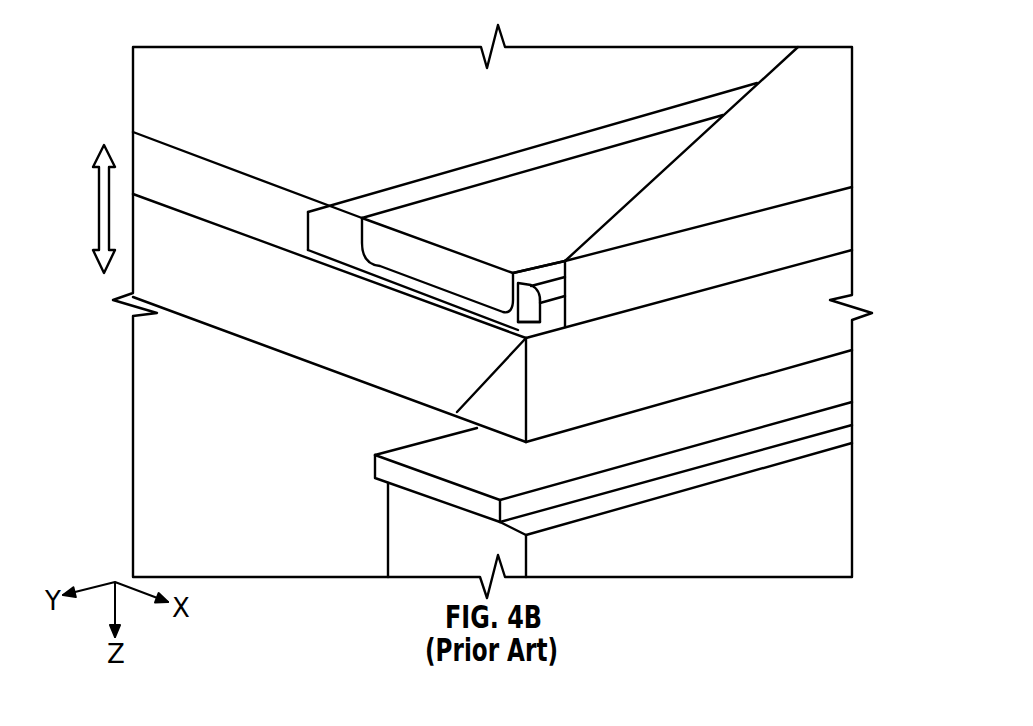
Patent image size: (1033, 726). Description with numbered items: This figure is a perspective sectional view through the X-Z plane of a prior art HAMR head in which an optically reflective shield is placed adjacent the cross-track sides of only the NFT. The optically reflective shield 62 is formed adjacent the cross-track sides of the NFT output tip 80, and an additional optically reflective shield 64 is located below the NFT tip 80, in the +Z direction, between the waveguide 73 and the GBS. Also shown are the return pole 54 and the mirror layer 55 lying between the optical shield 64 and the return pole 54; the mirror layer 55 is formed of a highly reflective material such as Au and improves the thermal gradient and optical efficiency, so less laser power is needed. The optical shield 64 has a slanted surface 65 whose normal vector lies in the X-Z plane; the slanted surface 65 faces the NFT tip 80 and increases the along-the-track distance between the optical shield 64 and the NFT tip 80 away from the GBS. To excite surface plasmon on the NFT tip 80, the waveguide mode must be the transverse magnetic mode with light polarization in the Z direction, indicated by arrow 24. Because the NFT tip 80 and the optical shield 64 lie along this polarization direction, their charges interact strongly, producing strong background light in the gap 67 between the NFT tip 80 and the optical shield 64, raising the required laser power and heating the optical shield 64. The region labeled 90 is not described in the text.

The arrow indicating light polarization direction 24 is at (98, 208).
The recess 90 is at (563, 213).
The optically reflective shield 62 is at (828, 220).
The additional optically reflective shield 64 is at (828, 275).
The gas bearing surface GBS is at (830, 322).
The NFT output tip 80 is at (532, 306).
The gap 67 is at (533, 328).
The slanted surface 65 is at (483, 382).
The waveguide 73 is at (347, 335).
The mirror layer 55 is at (838, 412).
The return pole 54 is at (815, 517).